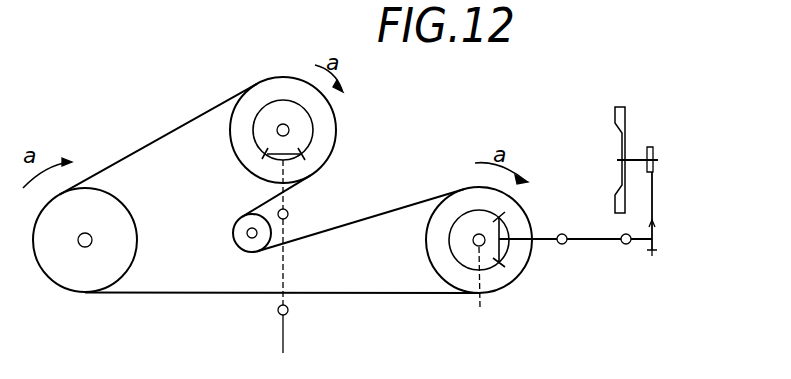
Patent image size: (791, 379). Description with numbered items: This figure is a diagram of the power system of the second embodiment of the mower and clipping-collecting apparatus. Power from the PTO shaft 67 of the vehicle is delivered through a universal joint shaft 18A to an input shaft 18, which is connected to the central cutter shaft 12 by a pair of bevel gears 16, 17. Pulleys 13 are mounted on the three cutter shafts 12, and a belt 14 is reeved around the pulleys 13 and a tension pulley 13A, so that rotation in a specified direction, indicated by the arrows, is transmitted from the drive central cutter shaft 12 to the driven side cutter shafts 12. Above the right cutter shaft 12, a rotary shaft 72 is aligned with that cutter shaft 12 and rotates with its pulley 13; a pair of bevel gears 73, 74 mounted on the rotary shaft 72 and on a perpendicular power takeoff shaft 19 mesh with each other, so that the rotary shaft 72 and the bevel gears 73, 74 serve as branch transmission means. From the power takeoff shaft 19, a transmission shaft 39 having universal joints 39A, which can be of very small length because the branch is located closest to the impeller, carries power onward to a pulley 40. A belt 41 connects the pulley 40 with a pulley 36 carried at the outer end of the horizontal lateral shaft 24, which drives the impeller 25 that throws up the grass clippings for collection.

The cutter shaft 12 is at (88, 247).
The pulley 13 is at (123, 227).
The tension pulley 13A is at (258, 245).
The belt 14 is at (362, 294).
The bevel gear 16 is at (262, 112).
The bevel gear 17 is at (306, 156).
The input shaft 18 is at (290, 203).
The universal joint shaft 18A is at (285, 267).
The power takeoff shaft 19 is at (554, 236).
The lateral shaft 24 is at (637, 157).
The impeller 25 is at (629, 116).
The pulley 36 is at (655, 150).
The transmission shaft 39 is at (607, 243).
The universal joint 39A is at (628, 244).
The pulley 40 is at (654, 249).
The belt 41 is at (656, 187).
The PTO shaft 67 is at (282, 341).
The rotary shaft 72 is at (476, 286).
The bevel gear 73 is at (470, 228).
The bevel gear 74 is at (503, 230).